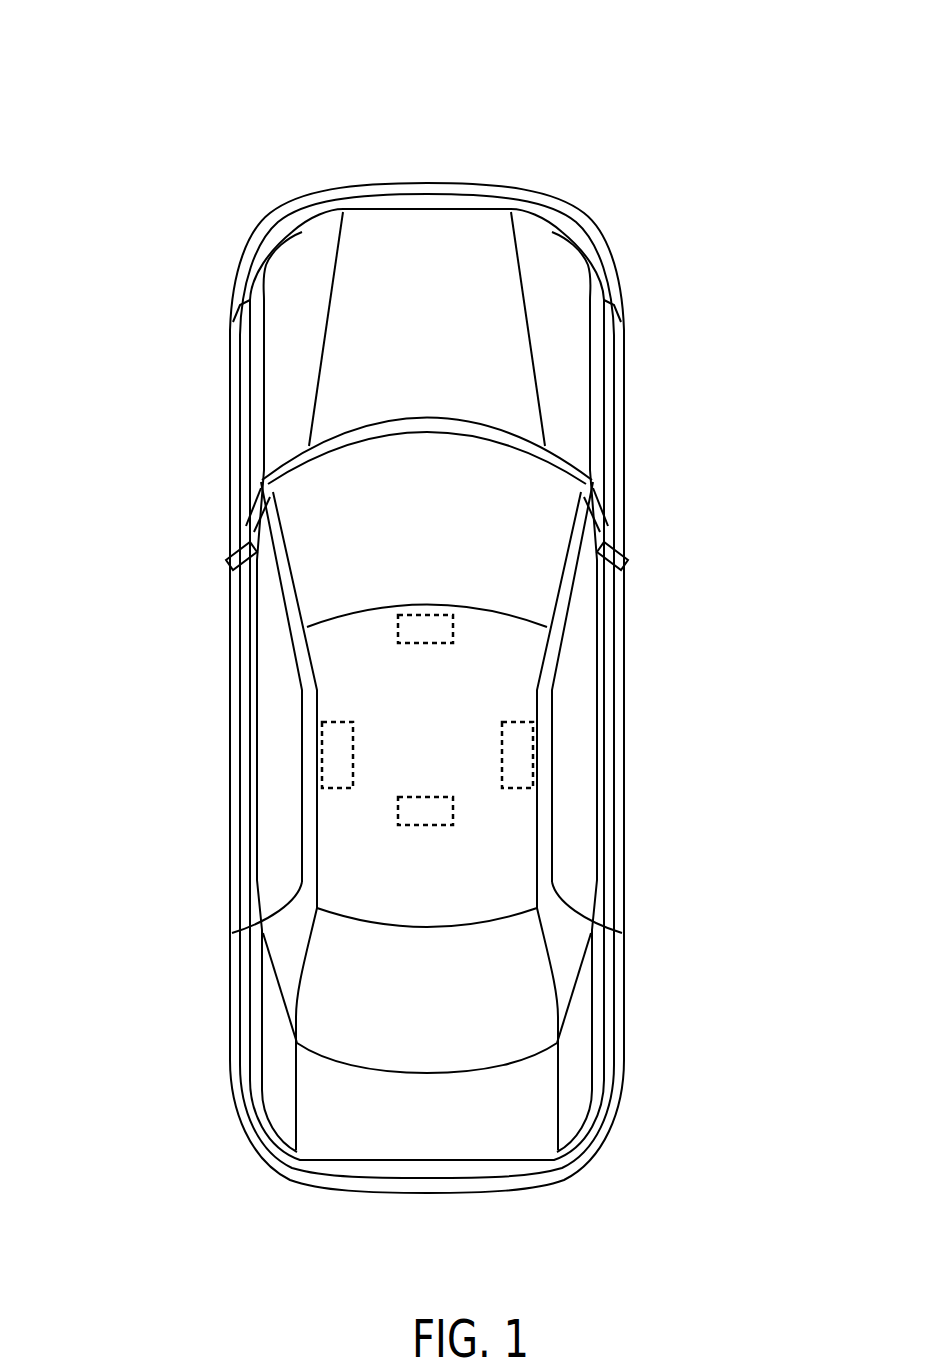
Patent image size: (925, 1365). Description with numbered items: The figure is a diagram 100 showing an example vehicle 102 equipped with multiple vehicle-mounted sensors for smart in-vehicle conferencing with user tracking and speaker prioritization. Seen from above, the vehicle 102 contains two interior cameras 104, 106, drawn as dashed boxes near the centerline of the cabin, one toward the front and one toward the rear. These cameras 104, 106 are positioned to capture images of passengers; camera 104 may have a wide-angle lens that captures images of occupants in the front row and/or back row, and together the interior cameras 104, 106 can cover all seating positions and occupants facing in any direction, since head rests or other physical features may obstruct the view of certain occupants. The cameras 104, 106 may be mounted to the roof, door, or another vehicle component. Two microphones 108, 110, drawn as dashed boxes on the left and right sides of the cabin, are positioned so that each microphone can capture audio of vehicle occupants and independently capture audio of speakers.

The diagram 100 is at (162, 22).
The vehicle 102 is at (270, 214).
The interior camera 104 is at (455, 632).
The interior camera 106 is at (455, 810).
The microphone 108 is at (322, 738).
The microphone 110 is at (532, 736).